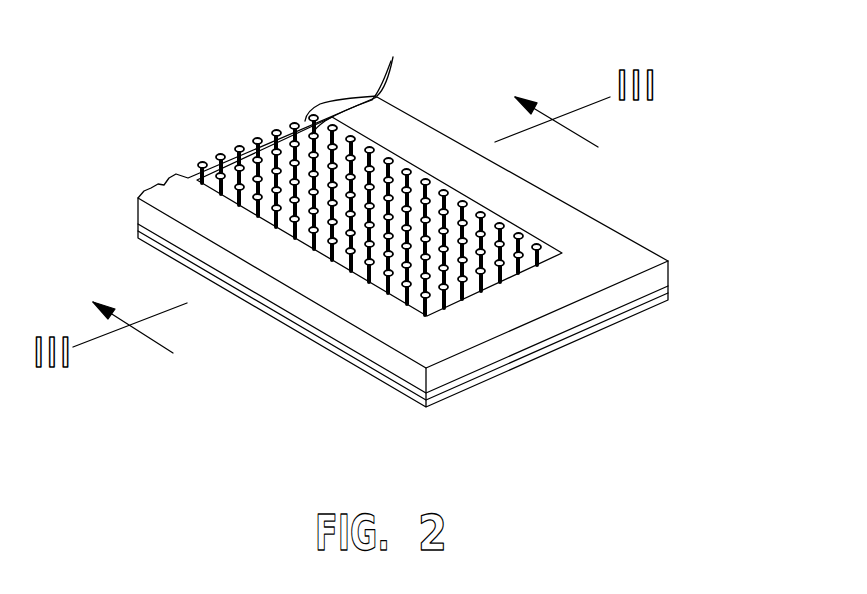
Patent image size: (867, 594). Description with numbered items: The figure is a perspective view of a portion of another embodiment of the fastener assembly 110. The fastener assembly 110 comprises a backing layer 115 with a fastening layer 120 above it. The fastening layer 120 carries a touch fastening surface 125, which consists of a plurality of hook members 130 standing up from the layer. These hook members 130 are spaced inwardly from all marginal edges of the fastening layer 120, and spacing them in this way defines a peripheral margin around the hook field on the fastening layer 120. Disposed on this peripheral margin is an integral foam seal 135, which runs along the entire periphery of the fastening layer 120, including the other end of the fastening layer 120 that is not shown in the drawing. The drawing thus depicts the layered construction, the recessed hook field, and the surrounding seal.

The fastener assembly 110 is at (449, 260).
The backing layer 115 is at (388, 382).
The fastening layer 120 is at (668, 284).
The touch fastening surface 125 is at (245, 120).
The hook members 130 is at (364, 78).
The integral foam seal 135 is at (620, 250).